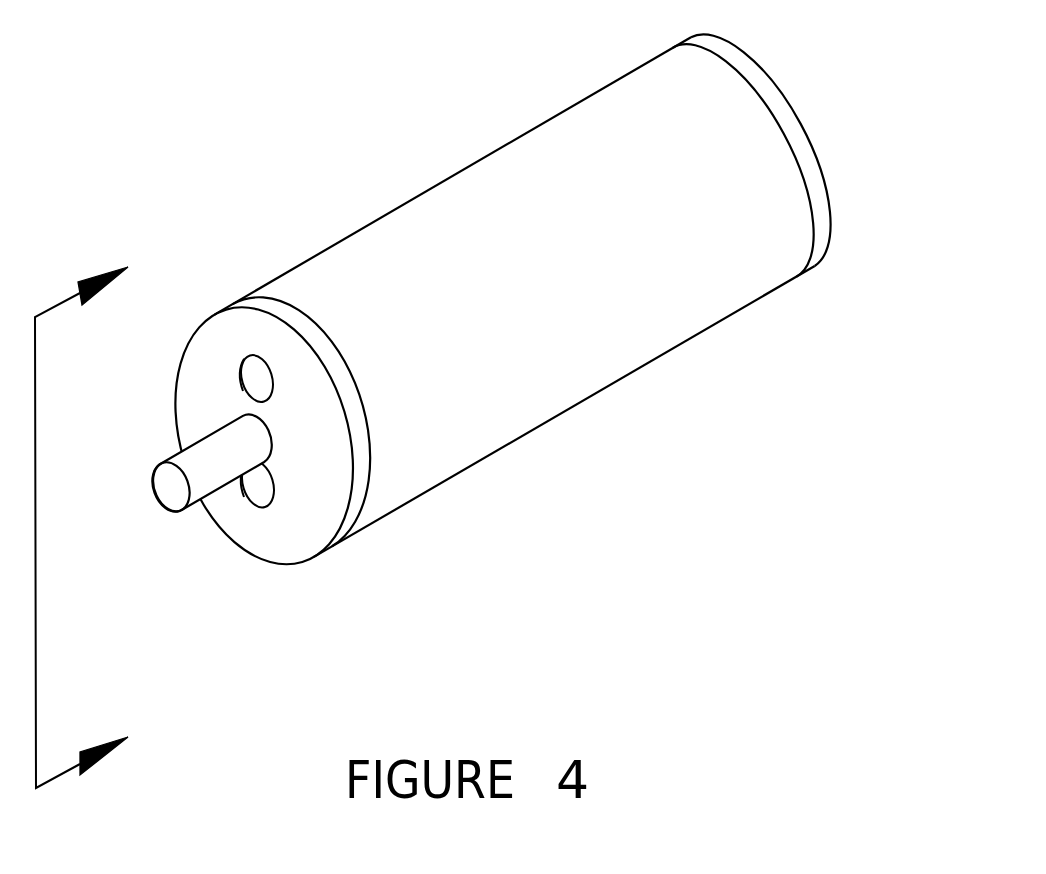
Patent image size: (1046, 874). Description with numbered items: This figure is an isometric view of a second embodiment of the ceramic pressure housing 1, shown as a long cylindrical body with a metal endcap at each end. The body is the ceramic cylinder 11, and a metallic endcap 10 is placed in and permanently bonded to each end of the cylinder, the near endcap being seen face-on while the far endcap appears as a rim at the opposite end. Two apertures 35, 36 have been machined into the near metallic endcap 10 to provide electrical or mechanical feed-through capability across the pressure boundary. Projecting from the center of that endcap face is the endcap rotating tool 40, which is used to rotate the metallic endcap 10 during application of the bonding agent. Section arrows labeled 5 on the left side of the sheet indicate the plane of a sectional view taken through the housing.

The ceramic pressure housing 1 is at (521, 332).
The section line 5- 5 is at (107, 505).
The metallic endcap 10 is at (836, 90).
The ceramic cylinder 11 is at (503, 490).
The aperture 35 is at (243, 390).
The aperture 36 is at (253, 503).
The endcap rotating tool 40 is at (128, 512).